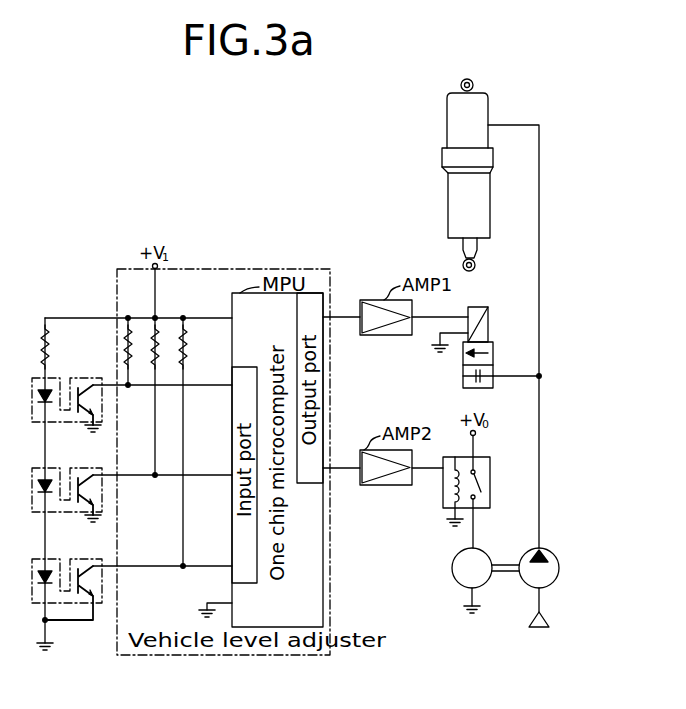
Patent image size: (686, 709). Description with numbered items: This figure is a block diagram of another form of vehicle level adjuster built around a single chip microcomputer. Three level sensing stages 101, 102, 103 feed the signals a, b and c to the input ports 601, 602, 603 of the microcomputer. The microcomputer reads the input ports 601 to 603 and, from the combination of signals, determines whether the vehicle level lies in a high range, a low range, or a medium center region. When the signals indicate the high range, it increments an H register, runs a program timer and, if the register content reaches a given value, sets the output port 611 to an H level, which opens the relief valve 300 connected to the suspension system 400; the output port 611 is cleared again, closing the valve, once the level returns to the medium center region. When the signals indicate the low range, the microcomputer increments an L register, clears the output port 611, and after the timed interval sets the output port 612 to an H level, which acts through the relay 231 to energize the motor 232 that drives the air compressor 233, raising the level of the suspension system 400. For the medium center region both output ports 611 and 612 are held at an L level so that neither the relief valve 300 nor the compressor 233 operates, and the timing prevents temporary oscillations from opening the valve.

The photocoupler (first level sensor) 101 is at (52, 379).
The photocoupler (second level sensor) 102 is at (52, 469).
The photocoupler (third level sensor) 103 is at (52, 560).
The input port 601 is at (228, 383).
The input port 602 is at (228, 473).
The input port 603 is at (228, 564).
The output port 611 is at (332, 316).
The output port 612 is at (332, 467).
The relief valve 300 is at (493, 345).
The suspension system 400 is at (488, 108).
The relay 231 is at (490, 482).
The motor 232 is at (486, 555).
The air compressor 233 is at (559, 560).